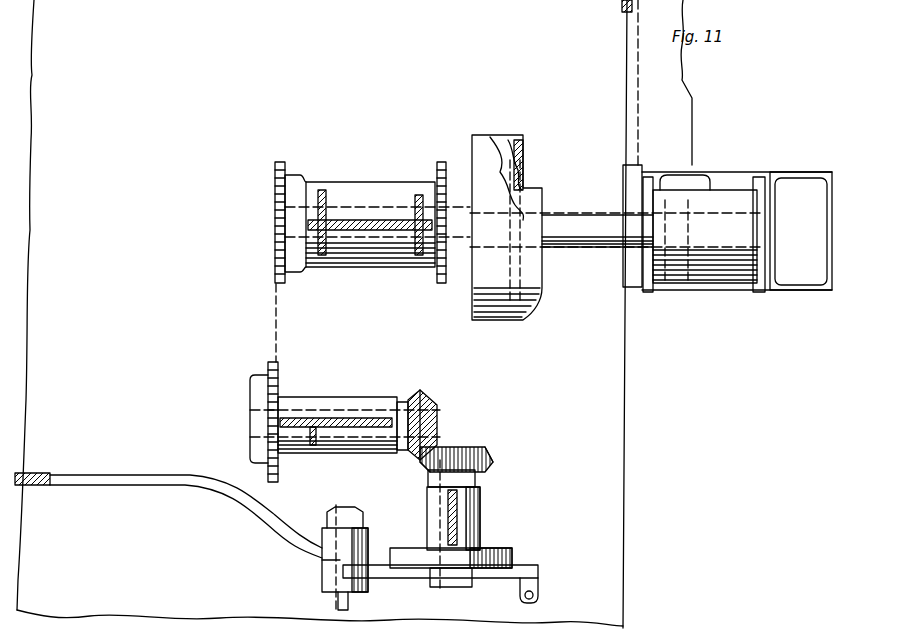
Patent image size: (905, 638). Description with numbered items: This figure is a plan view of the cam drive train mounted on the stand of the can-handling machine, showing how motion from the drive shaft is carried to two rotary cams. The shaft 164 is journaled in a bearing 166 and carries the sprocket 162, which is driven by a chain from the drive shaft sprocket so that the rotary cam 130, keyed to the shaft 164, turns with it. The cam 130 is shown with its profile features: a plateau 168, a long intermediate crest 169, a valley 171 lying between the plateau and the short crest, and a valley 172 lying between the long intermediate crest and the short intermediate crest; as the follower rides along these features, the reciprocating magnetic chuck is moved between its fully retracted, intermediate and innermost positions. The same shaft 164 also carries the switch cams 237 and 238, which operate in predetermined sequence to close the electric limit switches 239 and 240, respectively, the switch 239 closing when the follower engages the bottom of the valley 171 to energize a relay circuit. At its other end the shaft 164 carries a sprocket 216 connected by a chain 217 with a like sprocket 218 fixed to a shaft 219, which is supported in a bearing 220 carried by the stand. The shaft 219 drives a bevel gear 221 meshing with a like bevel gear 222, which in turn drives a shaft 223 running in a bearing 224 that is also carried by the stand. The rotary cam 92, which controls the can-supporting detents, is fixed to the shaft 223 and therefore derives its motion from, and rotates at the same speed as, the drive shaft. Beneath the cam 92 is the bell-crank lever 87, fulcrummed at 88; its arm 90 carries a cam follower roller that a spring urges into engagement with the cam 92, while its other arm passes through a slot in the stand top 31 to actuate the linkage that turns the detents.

The stand top 31 is at (607, 415).
The bell-crank lever 87 is at (370, 528).
The fulcrum 88 is at (322, 558).
The arm 90 is at (403, 575).
The rotary cam 92 is at (512, 558).
The rotary cam 130 is at (487, 318).
The sprocket 162 is at (440, 165).
The shaft 164 is at (568, 213).
The bearing 166 is at (357, 185).
The plateau 168 is at (540, 275).
The long intermediate crest 169 is at (538, 298).
The valley 171 is at (510, 145).
The valley 172 is at (500, 165).
The sprocket 216 is at (276, 160).
The chain 217 is at (276, 310).
The sprocket 218 is at (281, 373).
The shaft 219 is at (323, 407).
The bearing 220 is at (362, 397).
The bevel gear 221 is at (420, 400).
The bevel gear 222 is at (462, 455).
The shaft 223 is at (483, 515).
The bearing 224 is at (462, 517).
The switch cam 237 is at (758, 292).
The switch cam 238 is at (647, 290).
The electric limit switch 239 is at (795, 178).
The electric limit switch 240 is at (700, 175).